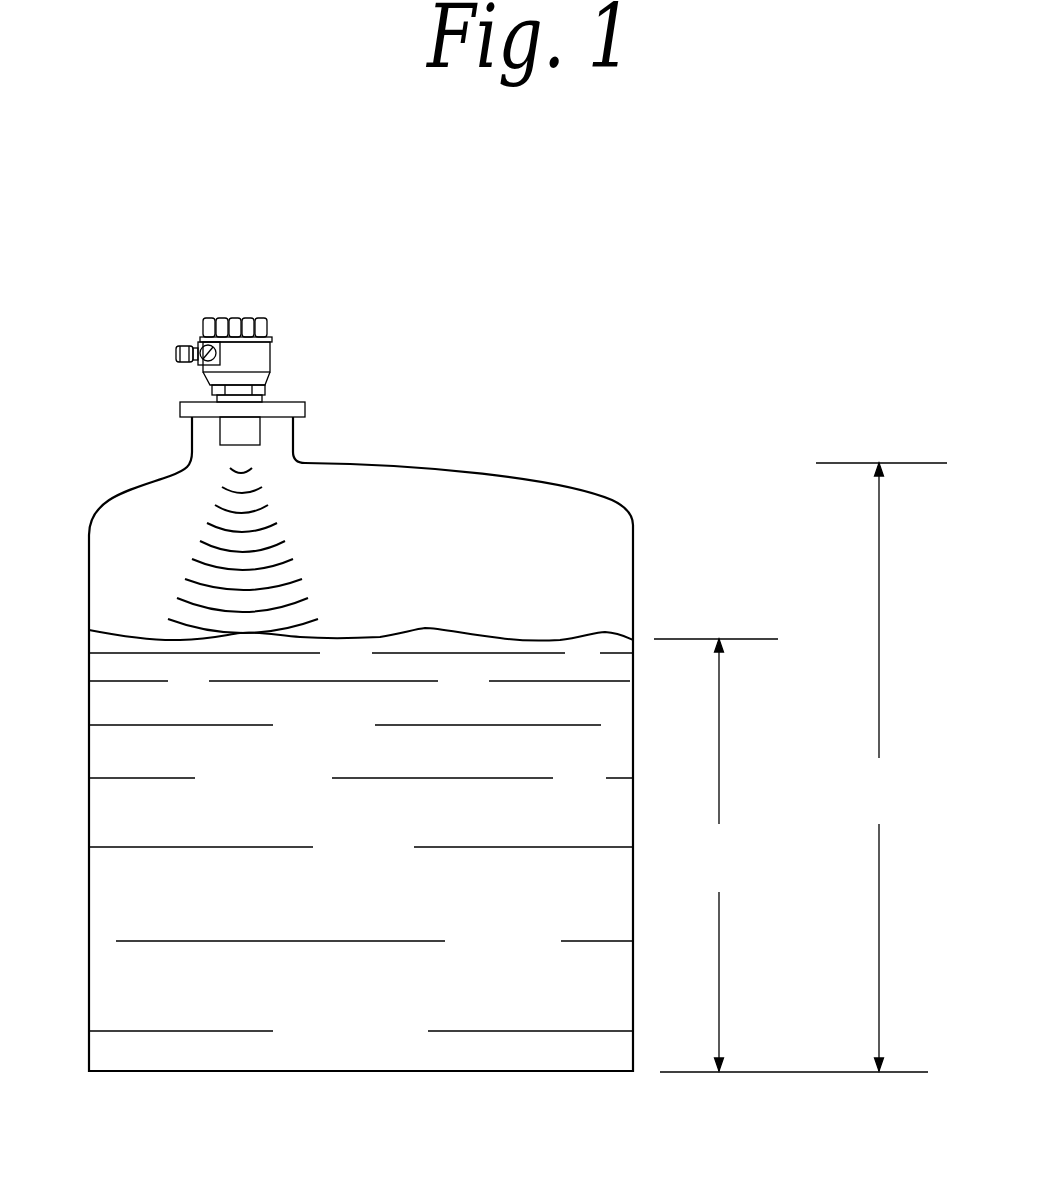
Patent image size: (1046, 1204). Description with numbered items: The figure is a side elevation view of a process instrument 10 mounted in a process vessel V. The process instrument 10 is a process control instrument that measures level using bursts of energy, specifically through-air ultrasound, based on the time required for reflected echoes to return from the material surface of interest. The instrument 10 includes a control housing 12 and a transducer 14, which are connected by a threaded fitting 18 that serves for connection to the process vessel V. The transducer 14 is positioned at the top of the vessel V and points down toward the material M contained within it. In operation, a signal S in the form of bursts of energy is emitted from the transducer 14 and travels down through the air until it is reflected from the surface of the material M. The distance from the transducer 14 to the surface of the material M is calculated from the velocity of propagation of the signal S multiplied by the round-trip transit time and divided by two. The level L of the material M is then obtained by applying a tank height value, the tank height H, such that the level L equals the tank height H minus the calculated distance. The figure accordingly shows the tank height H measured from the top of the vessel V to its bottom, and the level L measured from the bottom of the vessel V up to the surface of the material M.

The process instrument 10 is at (399, 328).
The control housing 12 is at (277, 357).
The threaded fitting 18 is at (267, 390).
The transducer 14 is at (265, 432).
The signal S is at (305, 547).
The material M is at (423, 628).
The process vessel V is at (635, 583).
The tank height H is at (803, 767).
The level L is at (716, 855).